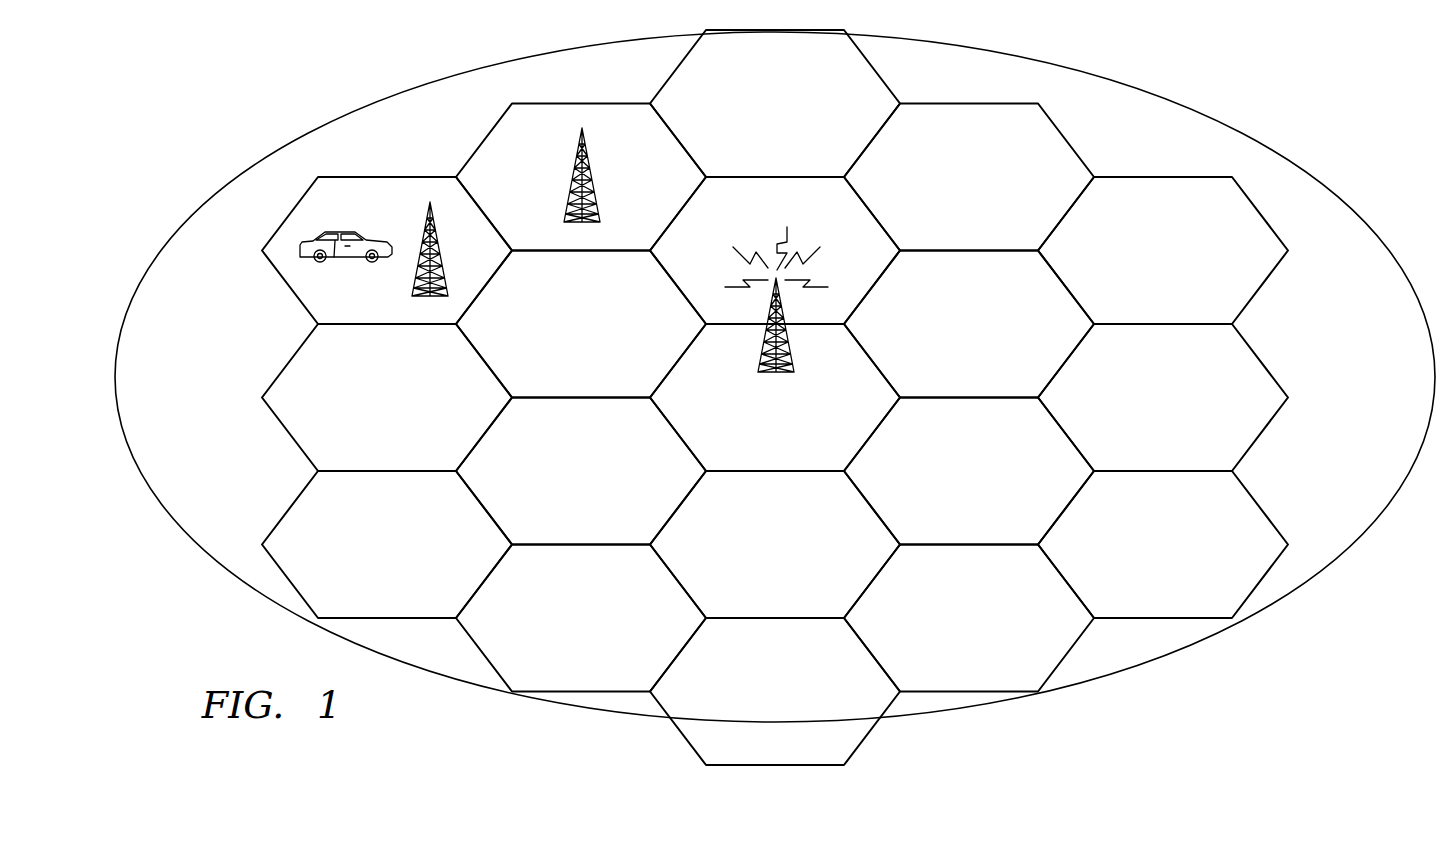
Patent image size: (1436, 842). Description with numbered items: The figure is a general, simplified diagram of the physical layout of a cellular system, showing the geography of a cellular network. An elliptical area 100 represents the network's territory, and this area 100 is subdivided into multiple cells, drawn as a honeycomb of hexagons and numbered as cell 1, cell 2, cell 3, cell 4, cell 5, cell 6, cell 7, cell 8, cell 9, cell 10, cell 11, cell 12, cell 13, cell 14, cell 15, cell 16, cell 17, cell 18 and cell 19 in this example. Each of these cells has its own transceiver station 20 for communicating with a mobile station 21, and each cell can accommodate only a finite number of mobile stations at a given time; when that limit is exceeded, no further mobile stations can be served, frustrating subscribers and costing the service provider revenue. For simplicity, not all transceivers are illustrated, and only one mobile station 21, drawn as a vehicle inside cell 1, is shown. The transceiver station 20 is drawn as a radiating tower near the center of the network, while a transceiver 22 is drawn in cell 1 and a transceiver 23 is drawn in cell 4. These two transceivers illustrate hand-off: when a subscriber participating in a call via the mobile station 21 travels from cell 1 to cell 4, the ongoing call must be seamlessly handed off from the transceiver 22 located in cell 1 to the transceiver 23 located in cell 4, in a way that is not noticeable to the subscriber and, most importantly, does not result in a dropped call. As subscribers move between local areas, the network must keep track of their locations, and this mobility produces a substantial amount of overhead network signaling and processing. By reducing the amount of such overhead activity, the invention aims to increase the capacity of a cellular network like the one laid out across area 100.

The cell 1 is at (387, 250).
The cell 2 is at (387, 397).
The cell 3 is at (387, 544).
The cell 4 is at (581, 177).
The cell 5 is at (581, 324).
The cell 6 is at (581, 471).
The cell 7 is at (581, 618).
The cell 8 is at (775, 103).
The cell 9 is at (775, 250).
The cell 10 is at (775, 397).
The cell 11 is at (775, 544).
The cell 12 is at (775, 691).
The cell 13 is at (969, 177).
The cell 14 is at (969, 324).
The cell 15 is at (969, 471).
The cell 16 is at (969, 618).
The cell 17 is at (1163, 250).
The cell 18 is at (1163, 397).
The cell 19 is at (1163, 544).
The transceiver station 20 is at (768, 369).
The mobile station 21 is at (370, 263).
The transceiver 22 is at (446, 247).
The transceiver 23 is at (570, 175).
The area 100 is at (1174, 694).